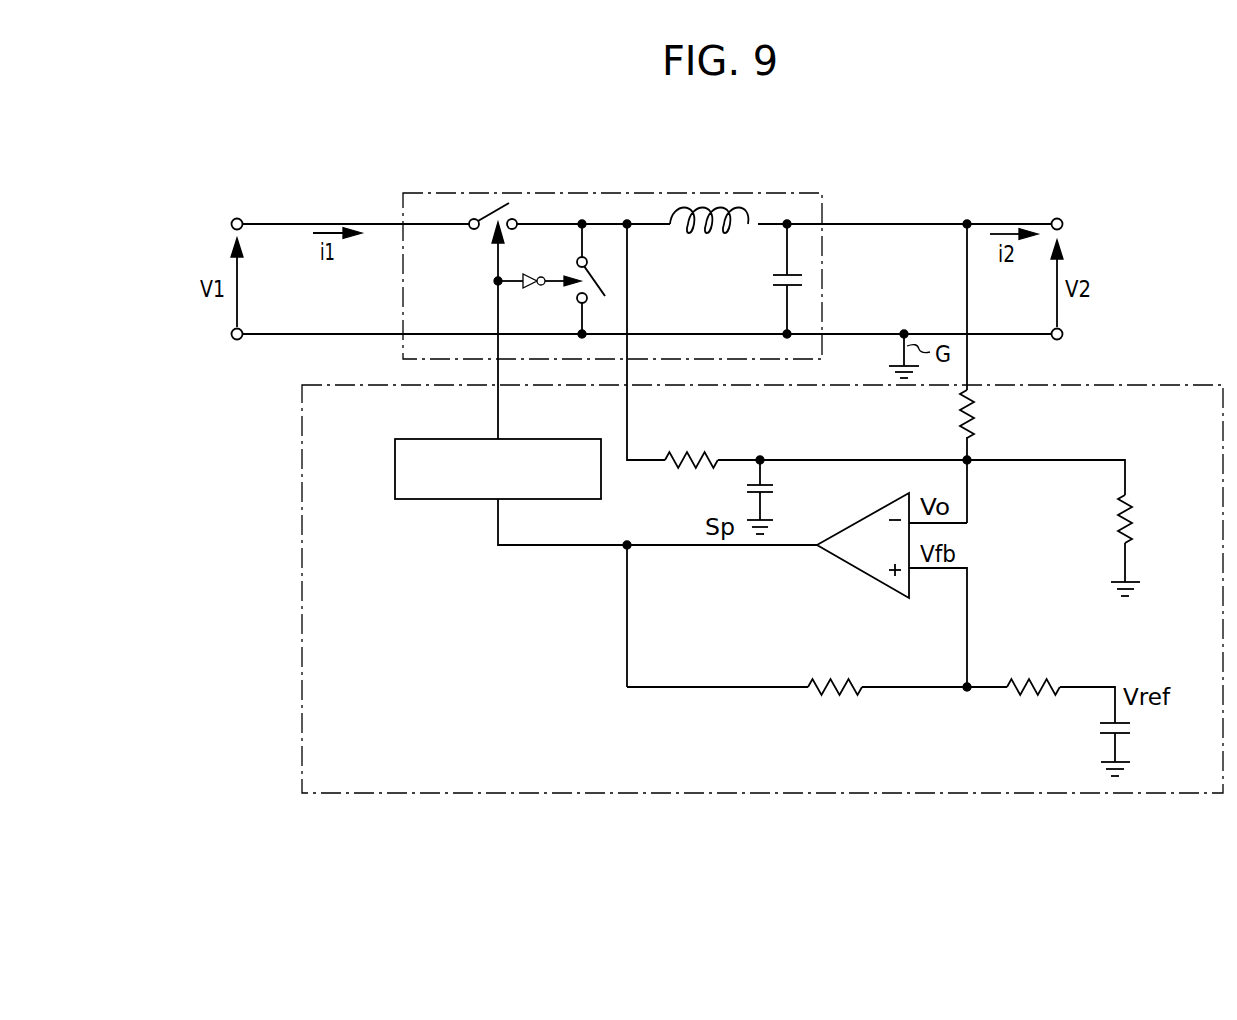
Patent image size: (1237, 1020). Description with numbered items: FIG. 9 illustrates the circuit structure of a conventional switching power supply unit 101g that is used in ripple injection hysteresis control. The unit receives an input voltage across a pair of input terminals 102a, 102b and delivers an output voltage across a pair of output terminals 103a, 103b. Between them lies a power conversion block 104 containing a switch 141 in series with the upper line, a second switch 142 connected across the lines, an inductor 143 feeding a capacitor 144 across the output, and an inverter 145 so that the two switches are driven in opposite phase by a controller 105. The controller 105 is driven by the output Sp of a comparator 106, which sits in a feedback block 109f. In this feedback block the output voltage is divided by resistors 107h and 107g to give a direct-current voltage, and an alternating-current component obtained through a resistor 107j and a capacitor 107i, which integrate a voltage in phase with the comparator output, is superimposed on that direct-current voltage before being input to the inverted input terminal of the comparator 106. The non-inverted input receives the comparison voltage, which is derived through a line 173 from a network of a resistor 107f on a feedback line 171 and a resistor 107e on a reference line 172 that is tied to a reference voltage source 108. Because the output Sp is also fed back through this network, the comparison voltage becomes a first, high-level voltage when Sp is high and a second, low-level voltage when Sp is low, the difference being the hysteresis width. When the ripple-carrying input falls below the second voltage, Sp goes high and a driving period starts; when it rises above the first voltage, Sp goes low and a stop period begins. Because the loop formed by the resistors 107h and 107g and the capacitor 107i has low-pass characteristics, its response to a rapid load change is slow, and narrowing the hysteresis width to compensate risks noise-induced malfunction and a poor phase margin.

The power conversion apparatus 101g is at (797, 128).
The input terminal (positive) 102a is at (262, 205).
The input terminal (negative) 102b is at (241, 340).
The output terminal (positive) 103a is at (1062, 218).
The output terminal (negative) 103b is at (1063, 334).
The power conversion circuit 104 is at (636, 193).
The controller 105 is at (395, 467).
The comparator 106 is at (880, 512).
The resistor 107e is at (1034, 692).
The resistor 107f is at (837, 692).
The resistor 107g is at (1133, 513).
The resistor 107h is at (975, 407).
The capacitor 107i is at (745, 487).
The resistor 107j is at (700, 452).
The reference voltage source 108 is at (1131, 729).
The control circuit 109f is at (302, 644).
The switch 141 is at (476, 231).
The switch 142 is at (575, 264).
The inductor 143 is at (722, 236).
The capacitor 144 is at (803, 280).
The inverter 145 is at (541, 286).
The feedback line 171 is at (729, 685).
The reference voltage line 172 is at (1086, 685).
The connection line 173 is at (967, 630).